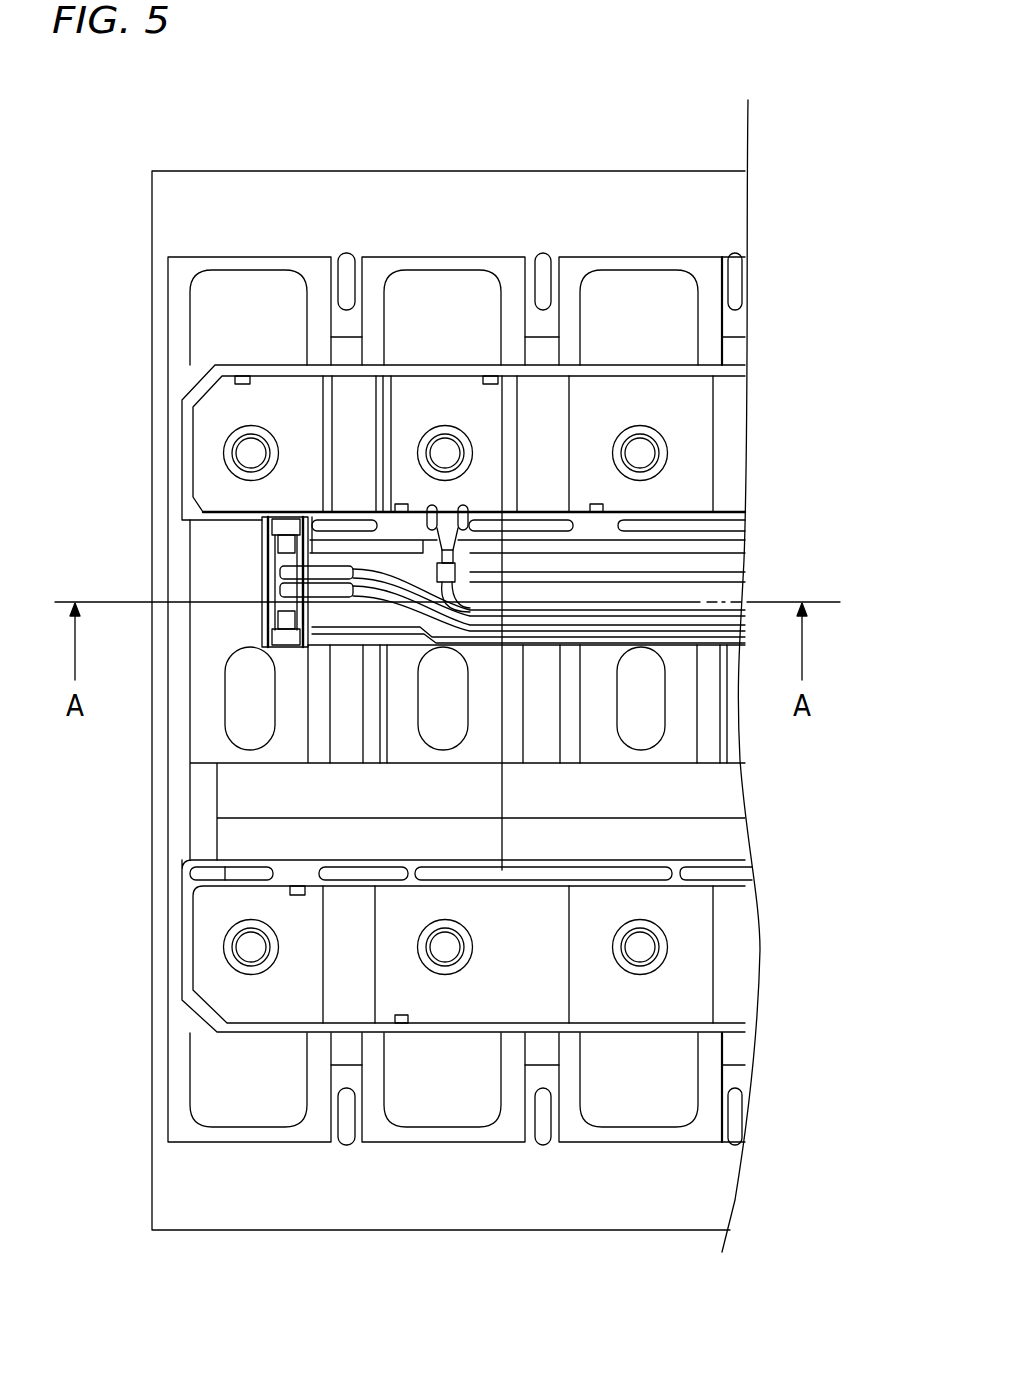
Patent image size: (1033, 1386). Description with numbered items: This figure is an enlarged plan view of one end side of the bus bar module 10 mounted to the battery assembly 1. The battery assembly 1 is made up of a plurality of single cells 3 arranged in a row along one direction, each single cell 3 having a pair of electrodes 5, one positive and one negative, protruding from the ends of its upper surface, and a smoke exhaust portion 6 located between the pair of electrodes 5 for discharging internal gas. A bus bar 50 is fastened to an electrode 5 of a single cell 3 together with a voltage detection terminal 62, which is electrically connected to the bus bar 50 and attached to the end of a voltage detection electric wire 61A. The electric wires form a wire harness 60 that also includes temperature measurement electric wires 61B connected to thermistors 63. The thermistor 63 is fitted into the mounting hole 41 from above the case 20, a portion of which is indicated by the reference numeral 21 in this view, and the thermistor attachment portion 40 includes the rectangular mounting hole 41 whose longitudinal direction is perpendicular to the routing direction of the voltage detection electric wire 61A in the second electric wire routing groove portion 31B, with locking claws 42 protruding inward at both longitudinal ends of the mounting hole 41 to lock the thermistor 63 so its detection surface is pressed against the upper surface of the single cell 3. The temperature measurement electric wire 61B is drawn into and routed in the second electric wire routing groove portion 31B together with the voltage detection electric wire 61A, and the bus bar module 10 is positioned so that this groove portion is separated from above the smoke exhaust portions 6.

The battery assembly 1 is at (210, 162).
The single cell 3 is at (250, 256).
The electrode 5 is at (448, 440).
The smoke exhaust portion 6 is at (237, 673).
The bus bar module 10 is at (205, 352).
The case 20 is at (680, 352).
The bus bar 21 is at (617, 370).
The second electric wire routing groove portion 31B is at (728, 592).
The thermistor attachment portion 40 is at (262, 568).
The mounting hole 41 is at (347, 592).
The locking claw 42 is at (287, 525).
The bus bar 50 is at (688, 412).
The wire harness 60 is at (675, 623).
The voltage detection electric wire 61A is at (455, 598).
The temperature measurement electric wire 61B is at (385, 597).
The voltage detection terminal 62 is at (485, 418).
The thermistor 63 is at (270, 625).